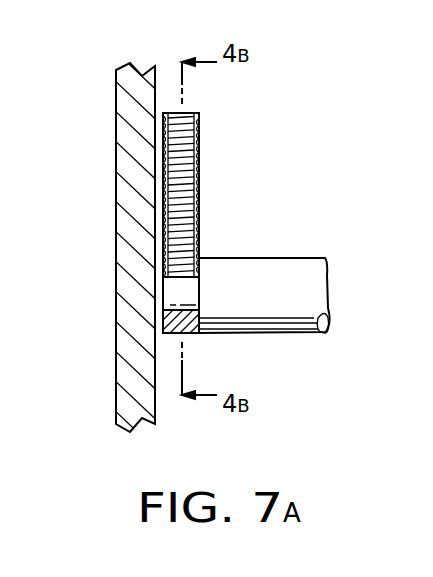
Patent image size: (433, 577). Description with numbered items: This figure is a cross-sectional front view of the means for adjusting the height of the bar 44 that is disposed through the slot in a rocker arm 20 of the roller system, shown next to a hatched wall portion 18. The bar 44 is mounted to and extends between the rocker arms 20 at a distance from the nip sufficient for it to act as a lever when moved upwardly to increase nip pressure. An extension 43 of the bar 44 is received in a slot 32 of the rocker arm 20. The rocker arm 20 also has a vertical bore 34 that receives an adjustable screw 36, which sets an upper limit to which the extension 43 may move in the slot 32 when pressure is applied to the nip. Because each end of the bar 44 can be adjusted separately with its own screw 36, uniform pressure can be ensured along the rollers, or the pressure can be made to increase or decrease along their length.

The wall 18 is at (117, 121).
The rocker arm 20 is at (190, 333).
The slot 32 is at (216, 186).
The vertical bore 34 is at (201, 193).
The adjustable screw 36 is at (200, 138).
The extension 43 is at (180, 285).
The bar 44 is at (292, 267).